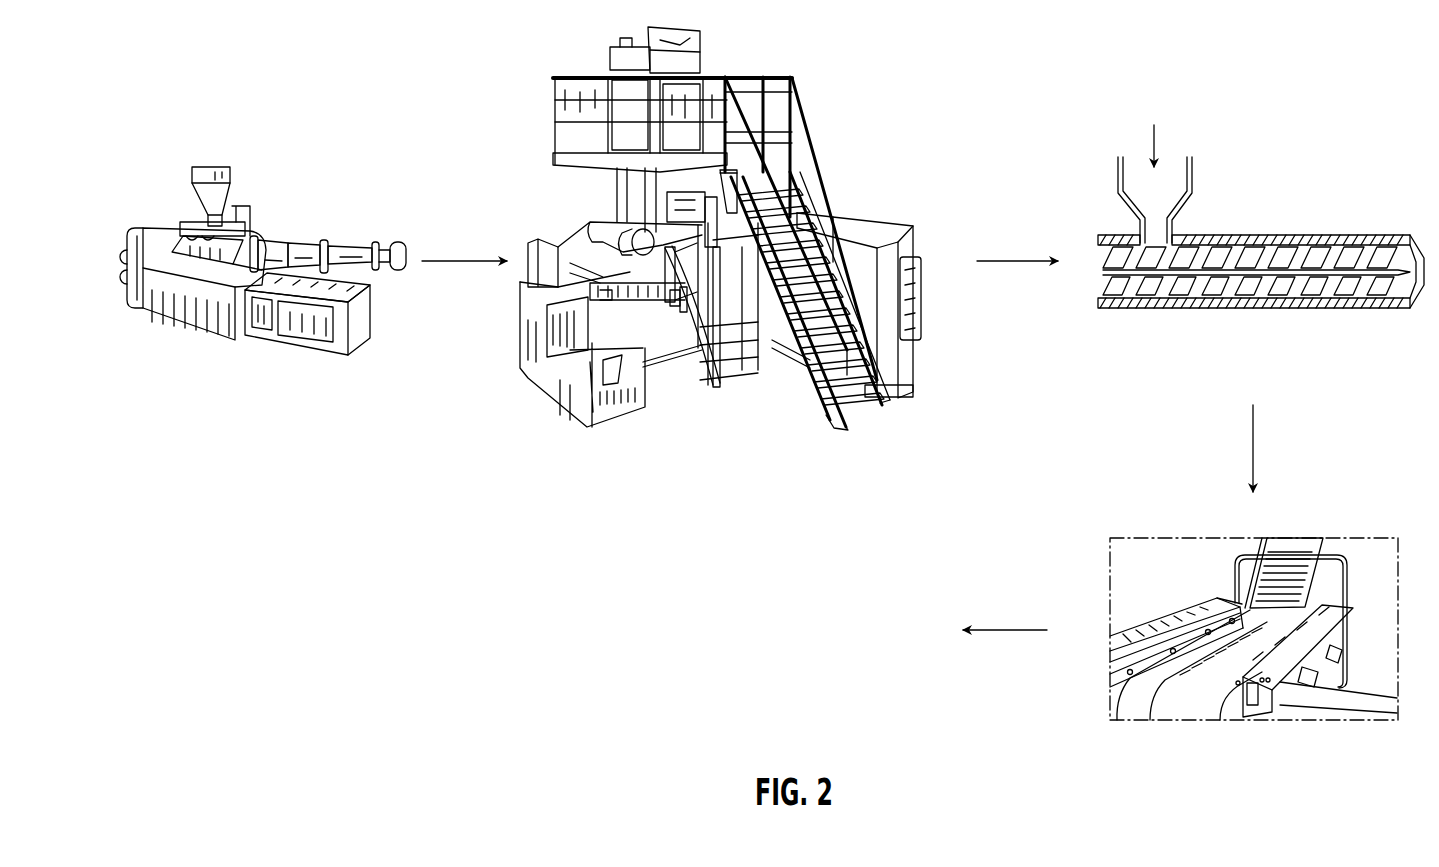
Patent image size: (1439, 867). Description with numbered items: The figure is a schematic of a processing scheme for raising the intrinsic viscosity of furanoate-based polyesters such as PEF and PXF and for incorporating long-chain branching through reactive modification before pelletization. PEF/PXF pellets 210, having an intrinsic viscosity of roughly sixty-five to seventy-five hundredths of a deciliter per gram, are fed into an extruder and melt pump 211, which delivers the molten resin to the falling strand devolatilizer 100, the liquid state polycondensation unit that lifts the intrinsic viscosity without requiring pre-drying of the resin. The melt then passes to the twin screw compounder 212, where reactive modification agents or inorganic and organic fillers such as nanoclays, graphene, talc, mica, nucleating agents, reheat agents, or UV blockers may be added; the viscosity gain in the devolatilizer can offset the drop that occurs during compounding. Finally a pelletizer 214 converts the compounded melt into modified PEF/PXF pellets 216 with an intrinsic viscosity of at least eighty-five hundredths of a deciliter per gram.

The falling strand devolatilizer 100 is at (792, 47).
The PEF/PXF pellets 210 is at (208, 132).
The extruder and melt pump 211 is at (188, 315).
The twin screw compounder 212 is at (1228, 107).
The pelletizer 214 is at (1148, 510).
The modified PEF/PXF pellets 216 is at (1005, 630).